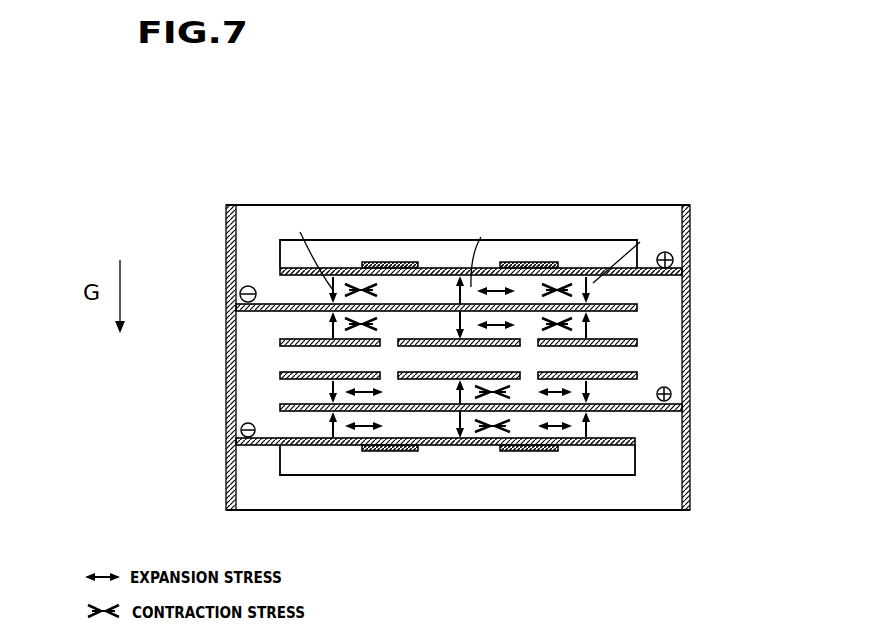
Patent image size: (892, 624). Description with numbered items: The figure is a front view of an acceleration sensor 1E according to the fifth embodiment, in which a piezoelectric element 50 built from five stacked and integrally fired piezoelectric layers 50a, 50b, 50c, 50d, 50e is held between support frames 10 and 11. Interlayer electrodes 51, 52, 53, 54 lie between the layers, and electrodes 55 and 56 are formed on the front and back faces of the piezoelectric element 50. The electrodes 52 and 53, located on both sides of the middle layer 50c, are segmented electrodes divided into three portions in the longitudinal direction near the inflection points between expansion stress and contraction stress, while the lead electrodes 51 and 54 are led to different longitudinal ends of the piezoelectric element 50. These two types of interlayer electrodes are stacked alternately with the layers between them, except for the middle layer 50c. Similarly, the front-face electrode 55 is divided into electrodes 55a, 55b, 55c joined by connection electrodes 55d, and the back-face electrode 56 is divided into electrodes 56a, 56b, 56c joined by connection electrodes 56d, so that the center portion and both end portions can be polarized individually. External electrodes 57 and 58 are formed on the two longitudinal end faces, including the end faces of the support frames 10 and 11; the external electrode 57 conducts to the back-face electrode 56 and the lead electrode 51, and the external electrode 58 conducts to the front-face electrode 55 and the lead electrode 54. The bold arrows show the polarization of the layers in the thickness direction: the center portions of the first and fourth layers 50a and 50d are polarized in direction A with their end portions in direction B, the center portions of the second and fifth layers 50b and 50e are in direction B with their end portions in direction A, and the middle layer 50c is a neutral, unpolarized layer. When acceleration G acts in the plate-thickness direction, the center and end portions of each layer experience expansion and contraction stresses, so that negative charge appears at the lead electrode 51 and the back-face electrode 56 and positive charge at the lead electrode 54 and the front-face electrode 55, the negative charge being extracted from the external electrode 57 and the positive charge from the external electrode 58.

The acceleration sensor 1E is at (753, 130).
The support frame 10 is at (635, 206).
The support frame 11 is at (635, 502).
The external electrode 57 is at (226, 228).
The external electrode 58 is at (691, 233).
The piezoelectric element 50 is at (755, 275).
The piezoelectric layer 50a is at (640, 288).
The piezoelectric layer 50b is at (628, 322).
The piezoelectric layer 50c is at (628, 353).
The piezoelectric layer 50d is at (628, 387).
The piezoelectric layer 50e is at (652, 423).
The lead electrode 51 is at (406, 287).
The segmented electrode 52 is at (406, 330).
The segmented electrode 53 is at (406, 364).
The lead electrode 54 is at (428, 399).
The front-face electrode 55 is at (585, 151).
The electrode 55a is at (448, 267).
The electrode 55b is at (320, 267).
The electrode 55c is at (595, 267).
The connection electrode 55d is at (385, 261).
The back-face electrode 56 is at (598, 562).
The electrode 56a is at (452, 447).
The electrode 56b is at (332, 447).
The electrode 56c is at (585, 447).
The connection electrode 56d is at (388, 452).